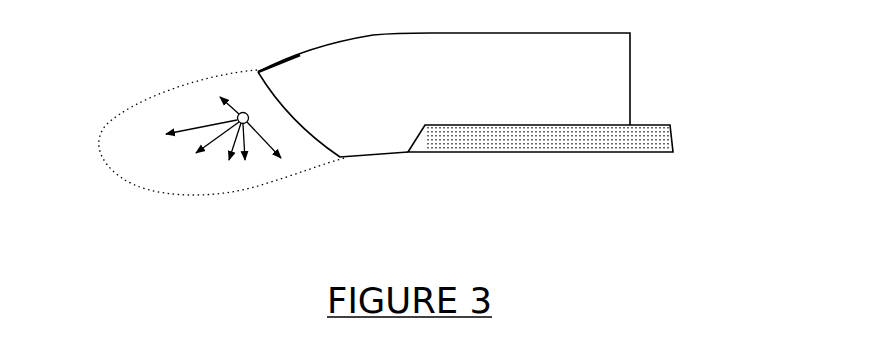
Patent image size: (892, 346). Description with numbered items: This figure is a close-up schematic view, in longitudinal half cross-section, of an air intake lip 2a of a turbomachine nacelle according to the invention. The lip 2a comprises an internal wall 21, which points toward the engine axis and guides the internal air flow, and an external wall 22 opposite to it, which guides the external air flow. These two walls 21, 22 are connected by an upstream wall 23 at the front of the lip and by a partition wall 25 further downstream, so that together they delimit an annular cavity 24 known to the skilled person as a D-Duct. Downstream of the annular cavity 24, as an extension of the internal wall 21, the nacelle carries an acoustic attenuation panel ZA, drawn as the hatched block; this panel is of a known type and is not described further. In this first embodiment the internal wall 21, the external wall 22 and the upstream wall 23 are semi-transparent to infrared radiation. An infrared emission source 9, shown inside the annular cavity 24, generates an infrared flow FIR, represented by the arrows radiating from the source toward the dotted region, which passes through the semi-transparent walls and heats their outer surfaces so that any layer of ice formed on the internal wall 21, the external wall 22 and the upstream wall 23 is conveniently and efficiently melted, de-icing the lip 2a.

The lip 2a is at (134, 56).
The infrared emission source 9 is at (245, 112).
The internal wall 21 is at (227, 165).
The external wall 22 is at (211, 92).
The upstream wall 23 is at (170, 128).
The annular cavity 24 is at (294, 150).
The partition wall 25 is at (287, 119).
The acoustic attenuation panel ZA is at (437, 150).
The infrared flow FIR is at (128, 186).